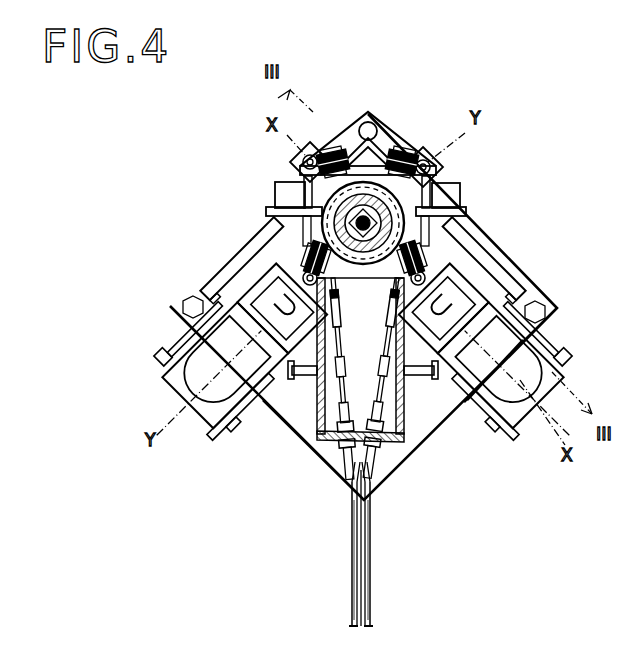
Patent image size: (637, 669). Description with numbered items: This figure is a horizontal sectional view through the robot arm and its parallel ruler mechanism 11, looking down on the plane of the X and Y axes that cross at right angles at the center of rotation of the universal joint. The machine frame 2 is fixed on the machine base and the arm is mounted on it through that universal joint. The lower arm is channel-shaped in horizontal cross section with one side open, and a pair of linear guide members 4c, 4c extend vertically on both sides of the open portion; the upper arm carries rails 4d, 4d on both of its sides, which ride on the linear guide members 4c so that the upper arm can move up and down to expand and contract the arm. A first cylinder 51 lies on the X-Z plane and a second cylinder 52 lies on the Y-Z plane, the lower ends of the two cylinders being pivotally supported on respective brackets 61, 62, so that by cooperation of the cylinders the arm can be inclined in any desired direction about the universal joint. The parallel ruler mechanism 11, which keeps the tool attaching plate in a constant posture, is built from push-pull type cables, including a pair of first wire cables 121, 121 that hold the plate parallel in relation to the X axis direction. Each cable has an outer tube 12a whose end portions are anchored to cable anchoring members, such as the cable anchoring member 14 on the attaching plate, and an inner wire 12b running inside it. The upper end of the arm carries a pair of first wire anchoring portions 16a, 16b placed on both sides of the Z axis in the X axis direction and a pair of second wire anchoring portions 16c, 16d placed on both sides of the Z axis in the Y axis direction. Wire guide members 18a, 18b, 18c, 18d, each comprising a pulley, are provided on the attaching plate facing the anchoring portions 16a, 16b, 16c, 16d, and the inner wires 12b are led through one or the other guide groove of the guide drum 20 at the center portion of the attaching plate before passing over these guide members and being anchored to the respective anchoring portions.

The machine frame 2 is at (500, 272).
The linear guide members 4c is at (290, 210).
The rails 4d is at (290, 193).
The first cylinder 51 is at (470, 388).
The second cylinder 52 is at (257, 388).
The bracket 61 is at (550, 362).
The bracket 62 is at (173, 352).
The parallel ruler mechanism 11 is at (374, 520).
The outer tube 12a is at (352, 506).
The inner wire 12b is at (360, 280).
The first wire cables 121 is at (389, 600).
The cable anchoring member 14 is at (392, 447).
The first wire anchoring portion 16a is at (482, 277).
The first wire anchoring portion 16b is at (318, 150).
The second wire anchoring portion 16c is at (295, 272).
The second wire anchoring portion 16d is at (433, 168).
The wire guide member 18a is at (432, 266).
The wire guide member 18b is at (331, 150).
The wire guide member 18c is at (304, 252).
The wire guide member 18d is at (405, 150).
The guide drum 20 is at (304, 186).